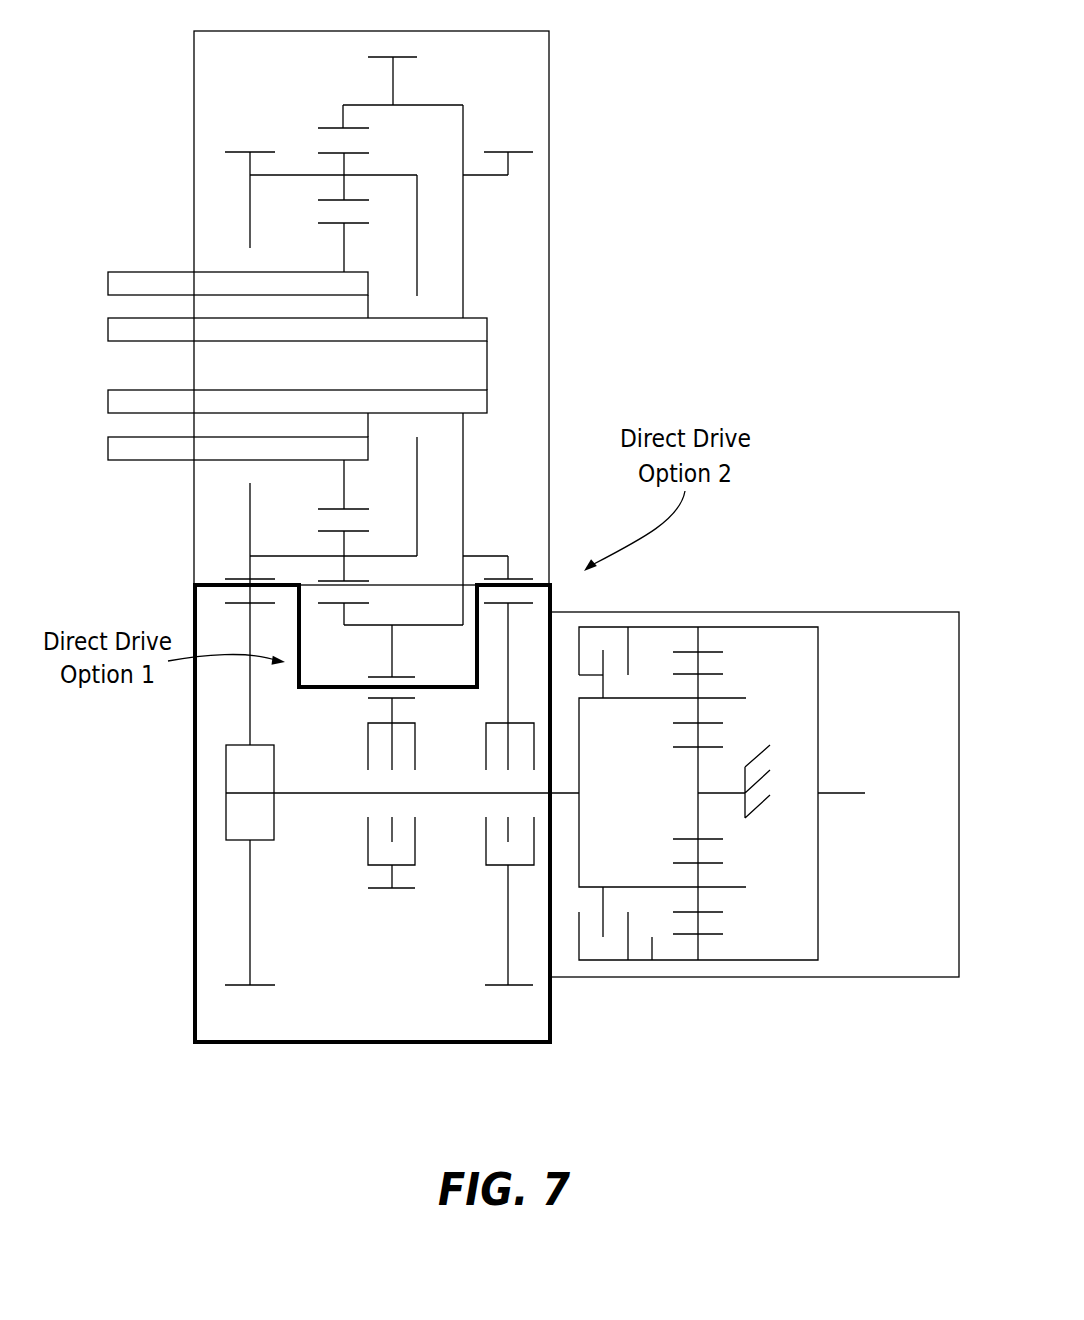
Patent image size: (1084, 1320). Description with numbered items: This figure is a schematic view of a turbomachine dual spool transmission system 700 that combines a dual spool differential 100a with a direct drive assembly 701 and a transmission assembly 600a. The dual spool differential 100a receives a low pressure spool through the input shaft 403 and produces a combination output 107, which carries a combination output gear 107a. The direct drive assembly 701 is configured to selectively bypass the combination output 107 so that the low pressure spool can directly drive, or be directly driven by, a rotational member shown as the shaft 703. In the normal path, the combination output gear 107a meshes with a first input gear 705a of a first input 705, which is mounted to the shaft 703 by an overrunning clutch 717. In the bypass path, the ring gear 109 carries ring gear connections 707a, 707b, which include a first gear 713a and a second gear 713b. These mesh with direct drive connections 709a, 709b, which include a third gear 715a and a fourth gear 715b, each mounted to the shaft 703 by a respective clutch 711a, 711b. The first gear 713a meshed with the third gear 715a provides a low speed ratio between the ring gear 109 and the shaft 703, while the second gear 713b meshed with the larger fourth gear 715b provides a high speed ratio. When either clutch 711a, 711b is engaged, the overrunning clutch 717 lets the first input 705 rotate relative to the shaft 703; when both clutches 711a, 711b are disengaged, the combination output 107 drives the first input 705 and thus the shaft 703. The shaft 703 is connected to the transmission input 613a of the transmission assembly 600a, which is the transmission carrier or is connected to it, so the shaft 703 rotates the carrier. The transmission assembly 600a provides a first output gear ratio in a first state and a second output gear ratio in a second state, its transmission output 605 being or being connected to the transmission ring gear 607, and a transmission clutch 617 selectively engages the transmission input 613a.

The dual spool differential 100a is at (558, 107).
The turbomachine dual spool transmission system 700 is at (669, 240).
The ring gear connection 707a is at (392, 80).
The ring gear connection 707b is at (487, 176).
The ring gear 109 is at (463, 272).
The input shaft 403 is at (455, 381).
The combination output 107 is at (249, 572).
The combination output gear 107a is at (233, 578).
The first input gear 705a is at (233, 600).
The first input 705 is at (250, 703).
The overrunning clutch 717 is at (212, 784).
The direct drive assembly 701 is at (224, 1013).
The first gear 713a is at (378, 676).
The third gear 715a is at (445, 670).
The direct drive connection 709a is at (390, 708).
The clutch 711a is at (376, 752).
The second gear 713b is at (522, 577).
The fourth gear 715b is at (530, 606).
The direct drive connection 709b is at (505, 665).
The clutch 711b is at (480, 752).
The shaft 703 is at (322, 795).
The transmission assembly 600a is at (806, 602).
The transmission ring gear 607 is at (818, 661).
The transmission input 613a is at (579, 750).
The transmission output 605 is at (840, 795).
The transmission clutch 617 is at (611, 924).